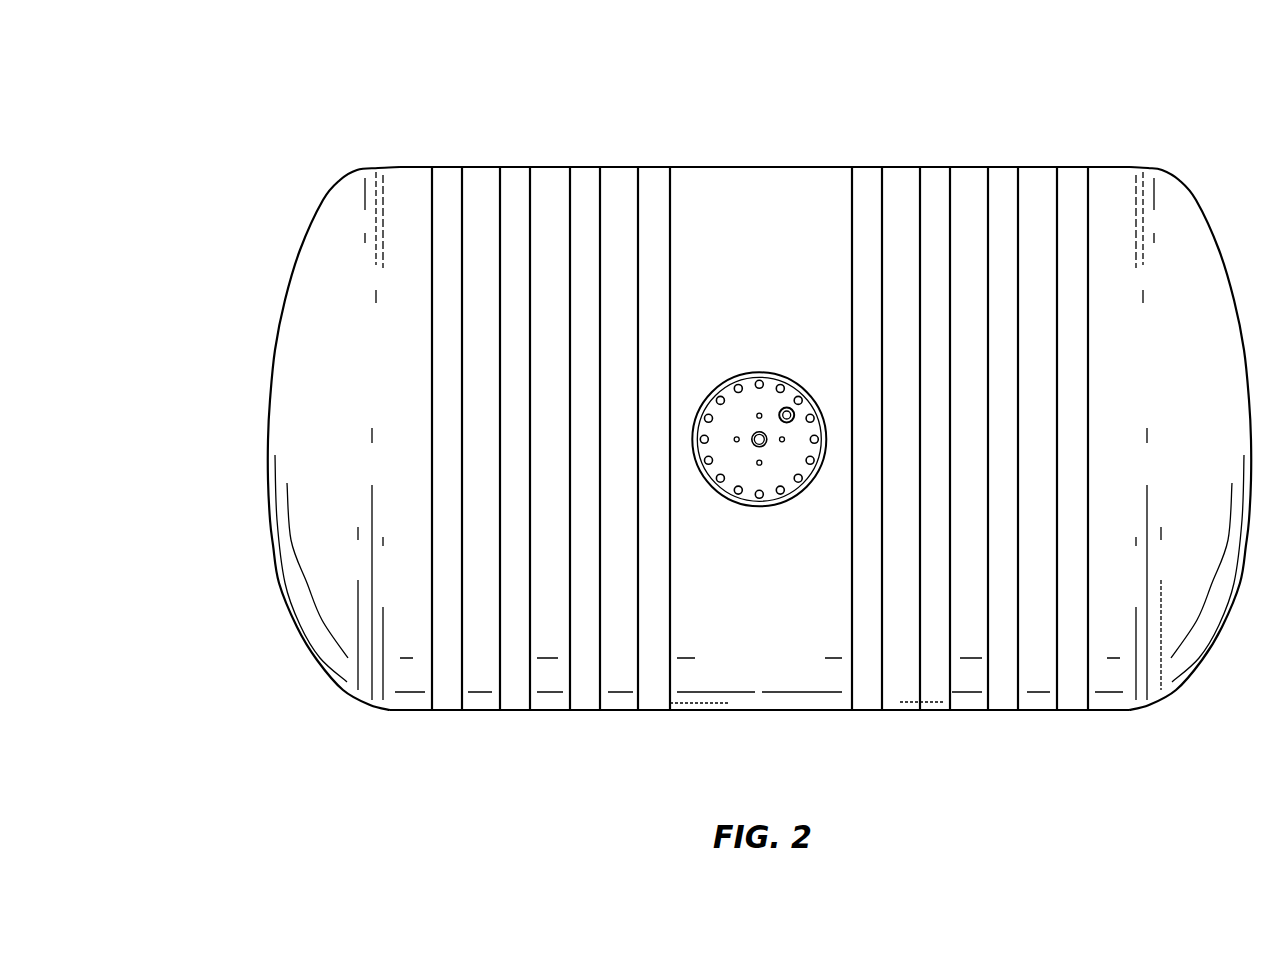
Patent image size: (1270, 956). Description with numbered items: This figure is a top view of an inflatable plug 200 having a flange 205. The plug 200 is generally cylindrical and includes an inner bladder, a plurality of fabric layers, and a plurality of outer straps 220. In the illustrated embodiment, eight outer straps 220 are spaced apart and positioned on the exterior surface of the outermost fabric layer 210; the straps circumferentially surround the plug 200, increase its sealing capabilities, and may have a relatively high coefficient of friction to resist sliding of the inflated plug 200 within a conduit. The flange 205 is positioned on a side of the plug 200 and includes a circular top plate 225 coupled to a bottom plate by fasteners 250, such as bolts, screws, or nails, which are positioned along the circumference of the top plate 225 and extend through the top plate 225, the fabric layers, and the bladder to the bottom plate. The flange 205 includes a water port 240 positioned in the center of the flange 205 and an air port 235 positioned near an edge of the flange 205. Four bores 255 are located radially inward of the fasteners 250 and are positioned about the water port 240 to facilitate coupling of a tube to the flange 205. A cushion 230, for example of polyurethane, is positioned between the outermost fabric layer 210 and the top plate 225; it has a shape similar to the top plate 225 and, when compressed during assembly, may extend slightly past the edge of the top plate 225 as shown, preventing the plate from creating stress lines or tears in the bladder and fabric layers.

The inflatable plug 200 is at (699, 433).
The flange 205 is at (765, 433).
The outermost fabric layer 210 is at (407, 182).
The outer straps 220 is at (447, 176).
The top plate 225 is at (707, 398).
The cushion 230 is at (758, 362).
The air port 235 is at (793, 410).
The water port 240 is at (767, 443).
The fasteners 250 is at (782, 385).
The bores 255 is at (759, 463).